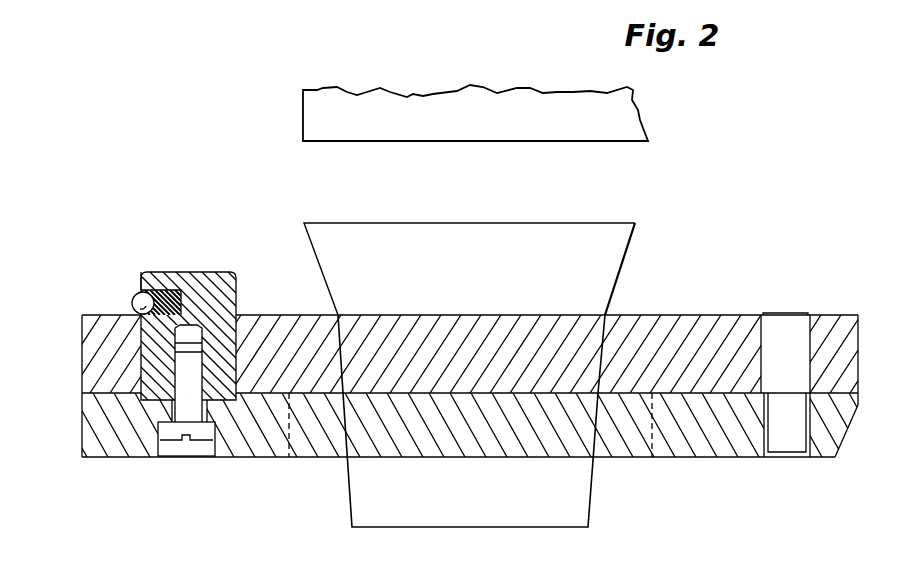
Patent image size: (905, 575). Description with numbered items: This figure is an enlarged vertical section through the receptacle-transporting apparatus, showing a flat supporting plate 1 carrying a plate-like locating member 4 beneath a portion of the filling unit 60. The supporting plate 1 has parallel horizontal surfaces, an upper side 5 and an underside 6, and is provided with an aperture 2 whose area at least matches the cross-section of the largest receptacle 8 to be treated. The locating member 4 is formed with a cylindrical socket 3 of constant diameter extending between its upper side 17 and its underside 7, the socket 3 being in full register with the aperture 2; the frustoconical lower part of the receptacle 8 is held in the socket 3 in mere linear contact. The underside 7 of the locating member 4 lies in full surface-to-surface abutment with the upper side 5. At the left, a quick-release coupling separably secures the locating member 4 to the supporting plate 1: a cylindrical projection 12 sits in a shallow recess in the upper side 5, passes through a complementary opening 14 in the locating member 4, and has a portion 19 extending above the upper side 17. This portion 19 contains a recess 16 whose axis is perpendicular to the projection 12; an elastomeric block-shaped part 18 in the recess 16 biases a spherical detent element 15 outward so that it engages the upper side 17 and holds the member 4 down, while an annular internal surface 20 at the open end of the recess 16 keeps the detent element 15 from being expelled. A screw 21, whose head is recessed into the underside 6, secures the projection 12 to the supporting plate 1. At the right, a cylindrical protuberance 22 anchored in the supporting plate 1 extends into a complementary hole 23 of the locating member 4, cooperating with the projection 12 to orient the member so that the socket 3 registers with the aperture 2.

The supporting plate 1 is at (718, 445).
The aperture 2 is at (520, 442).
The socket 3 is at (343, 357).
The locating member 4 is at (698, 330).
The upper side of supporting plate 5 is at (263, 391).
The underside of supporting plate 6 is at (265, 453).
The underside of locating member 7 is at (827, 390).
The receptacle 8 is at (493, 222).
The projection 12 is at (215, 282).
The opening 14 is at (140, 338).
The spherical detent element 15 is at (133, 297).
The recess 16 is at (180, 291).
The upper side of locating member 17 is at (97, 315).
The block-shaped part 18 is at (160, 289).
The portion of projection 19 is at (237, 298).
The annular internal surface 20 is at (142, 292).
The screw 21 is at (198, 432).
The cylindrical protuberance 22 is at (783, 328).
The hole 23 is at (817, 340).
The filling unit 60 is at (648, 122).